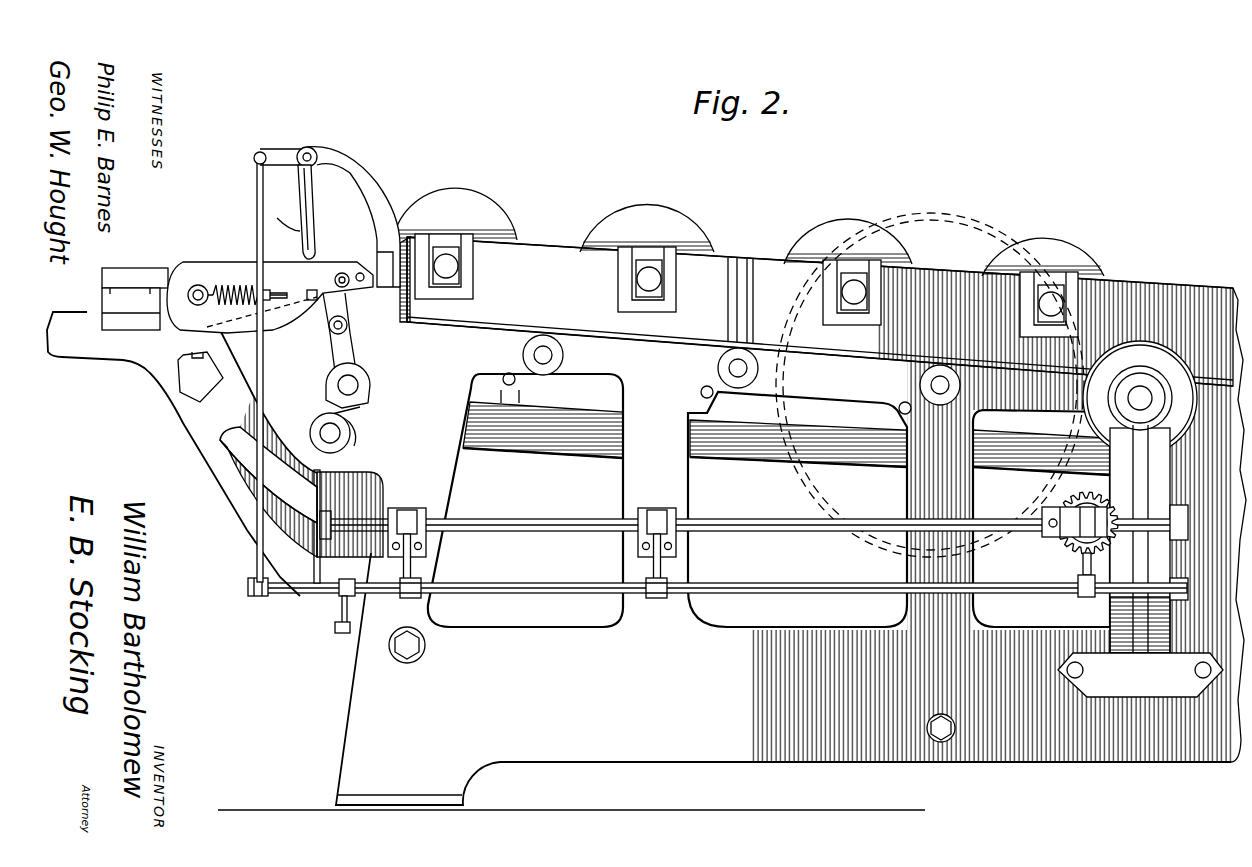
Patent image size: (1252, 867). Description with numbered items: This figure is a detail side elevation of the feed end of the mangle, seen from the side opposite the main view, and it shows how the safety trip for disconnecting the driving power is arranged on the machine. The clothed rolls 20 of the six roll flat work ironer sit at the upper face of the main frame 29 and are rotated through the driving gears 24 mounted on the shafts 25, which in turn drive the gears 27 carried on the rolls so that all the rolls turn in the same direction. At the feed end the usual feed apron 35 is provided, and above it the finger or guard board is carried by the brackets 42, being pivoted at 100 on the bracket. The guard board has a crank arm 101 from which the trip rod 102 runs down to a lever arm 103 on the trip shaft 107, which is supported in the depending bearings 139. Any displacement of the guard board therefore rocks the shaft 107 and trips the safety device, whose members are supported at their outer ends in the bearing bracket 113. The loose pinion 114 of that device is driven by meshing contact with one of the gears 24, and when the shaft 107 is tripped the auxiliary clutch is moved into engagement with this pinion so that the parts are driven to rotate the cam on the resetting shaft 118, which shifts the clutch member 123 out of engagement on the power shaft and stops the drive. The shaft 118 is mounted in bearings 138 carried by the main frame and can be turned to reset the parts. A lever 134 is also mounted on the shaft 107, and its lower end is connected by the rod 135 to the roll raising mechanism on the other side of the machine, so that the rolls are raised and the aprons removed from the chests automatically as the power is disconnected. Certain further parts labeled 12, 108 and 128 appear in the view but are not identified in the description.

The main frame 12 is at (732, 523).
The clothed rolls 20 is at (492, 208).
The driving gears 24 is at (950, 214).
The shafts 25 is at (563, 362).
The gears 27 is at (1042, 512).
The main frame 29 is at (513, 500).
The feed apron 35 is at (230, 254).
The brackets 42 is at (385, 180).
The pivot 100 is at (305, 147).
The crank arm 101 is at (257, 152).
The trip rod 102 is at (215, 432).
The lever arm 103 is at (246, 590).
The shaft 107 is at (518, 583).
The frame opening 108 is at (899, 509).
The bearing bracket 113 is at (1115, 608).
The pinion 114 is at (1065, 547).
The shaft 118 is at (555, 511).
The clutch member 123 is at (1150, 340).
The collar 128 is at (313, 560).
The lever 134 is at (340, 606).
The rod 135 is at (335, 629).
The bearings 138 is at (407, 514).
The depending bearings 139 is at (408, 598).